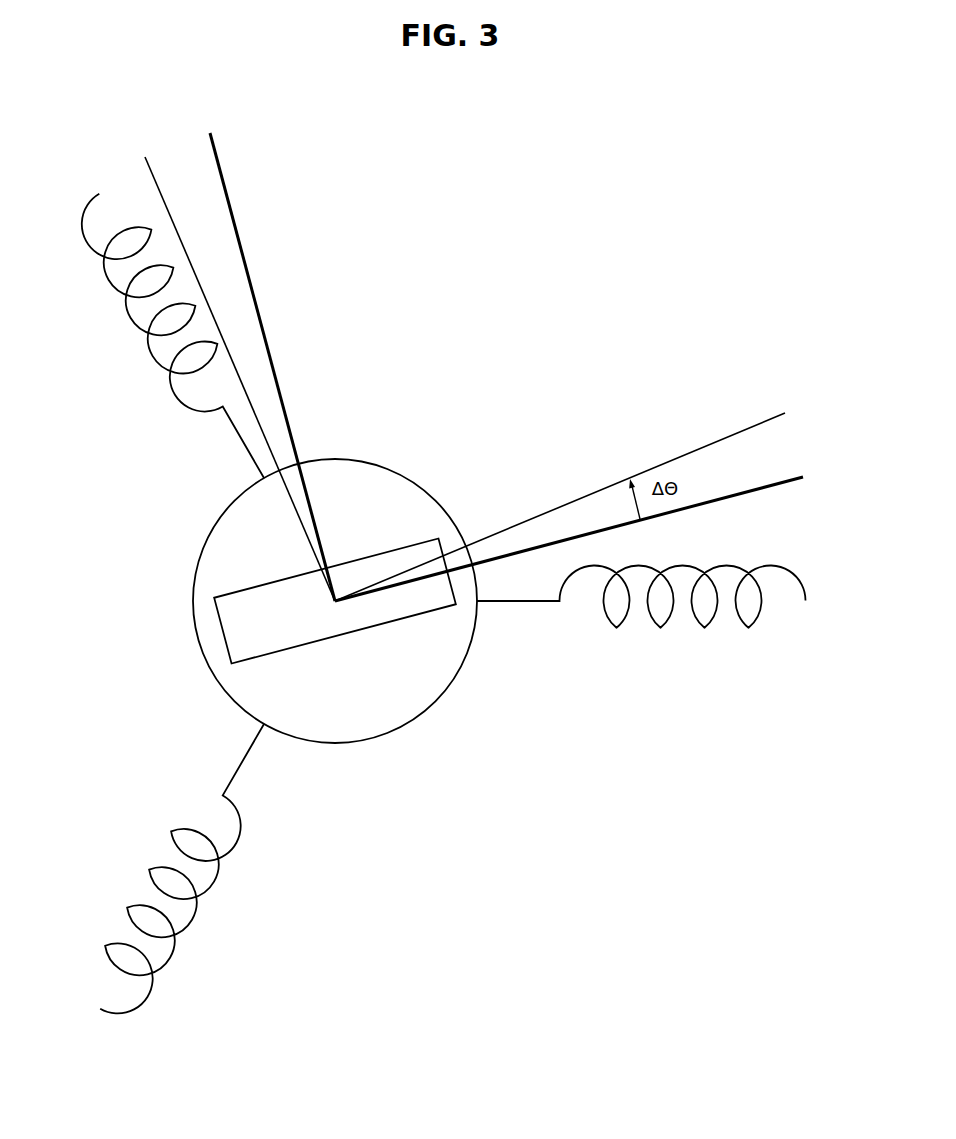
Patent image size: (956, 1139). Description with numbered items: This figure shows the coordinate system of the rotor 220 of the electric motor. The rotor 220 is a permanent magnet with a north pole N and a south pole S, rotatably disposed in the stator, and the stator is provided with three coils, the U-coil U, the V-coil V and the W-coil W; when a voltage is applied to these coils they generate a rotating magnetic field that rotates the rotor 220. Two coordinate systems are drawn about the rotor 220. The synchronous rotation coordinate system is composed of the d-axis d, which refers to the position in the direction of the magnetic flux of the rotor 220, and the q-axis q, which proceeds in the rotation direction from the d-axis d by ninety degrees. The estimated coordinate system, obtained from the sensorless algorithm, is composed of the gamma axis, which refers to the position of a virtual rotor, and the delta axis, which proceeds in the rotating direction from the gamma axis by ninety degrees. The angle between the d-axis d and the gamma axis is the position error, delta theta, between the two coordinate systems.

The rotor 220 is at (407, 618).
The U-coil U is at (650, 596).
The V-coil V is at (178, 332).
The W-coil W is at (186, 873).
The q-axis q is at (267, 350).
The d-axis d is at (580, 531).